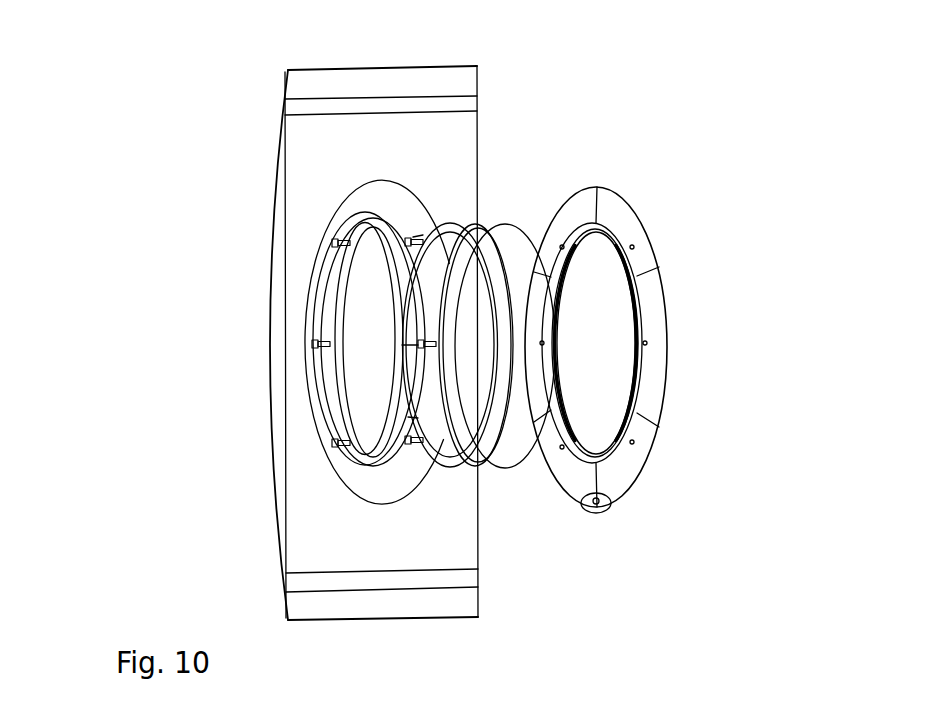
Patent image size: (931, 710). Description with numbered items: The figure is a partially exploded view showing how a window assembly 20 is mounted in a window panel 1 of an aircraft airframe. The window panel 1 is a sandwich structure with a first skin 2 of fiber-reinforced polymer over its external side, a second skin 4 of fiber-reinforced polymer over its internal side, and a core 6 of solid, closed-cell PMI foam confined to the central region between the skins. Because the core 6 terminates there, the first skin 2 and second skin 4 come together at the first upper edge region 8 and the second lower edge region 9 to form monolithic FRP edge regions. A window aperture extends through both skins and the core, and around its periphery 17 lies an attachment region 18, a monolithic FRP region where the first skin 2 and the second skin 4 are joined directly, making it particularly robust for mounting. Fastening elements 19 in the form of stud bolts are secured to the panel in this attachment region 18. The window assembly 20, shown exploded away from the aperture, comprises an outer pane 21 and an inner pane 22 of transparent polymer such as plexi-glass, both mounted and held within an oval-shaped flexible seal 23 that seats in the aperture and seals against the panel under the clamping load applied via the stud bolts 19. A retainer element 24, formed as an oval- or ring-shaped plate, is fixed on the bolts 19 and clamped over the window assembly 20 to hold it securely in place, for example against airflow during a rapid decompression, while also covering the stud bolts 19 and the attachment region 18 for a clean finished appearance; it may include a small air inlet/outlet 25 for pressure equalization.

The window panel 1 is at (738, 173).
The first skin 2 is at (284, 146).
The second skin 4 is at (360, 130).
The core 6 is at (276, 365).
The first upper edge region 8 is at (272, 104).
The second lower edge region 9 is at (486, 580).
The periphery 17 is at (358, 222).
The attachment region 18 is at (362, 462).
The fastening elements 19 is at (331, 244).
The window assembly 20 is at (523, 257).
The outer pane 21 is at (408, 220).
The inner pane 22 is at (481, 212).
The flexible seal 23 is at (542, 295).
The retainer element 24 is at (653, 270).
The air inlet/outlet 25 is at (616, 507).